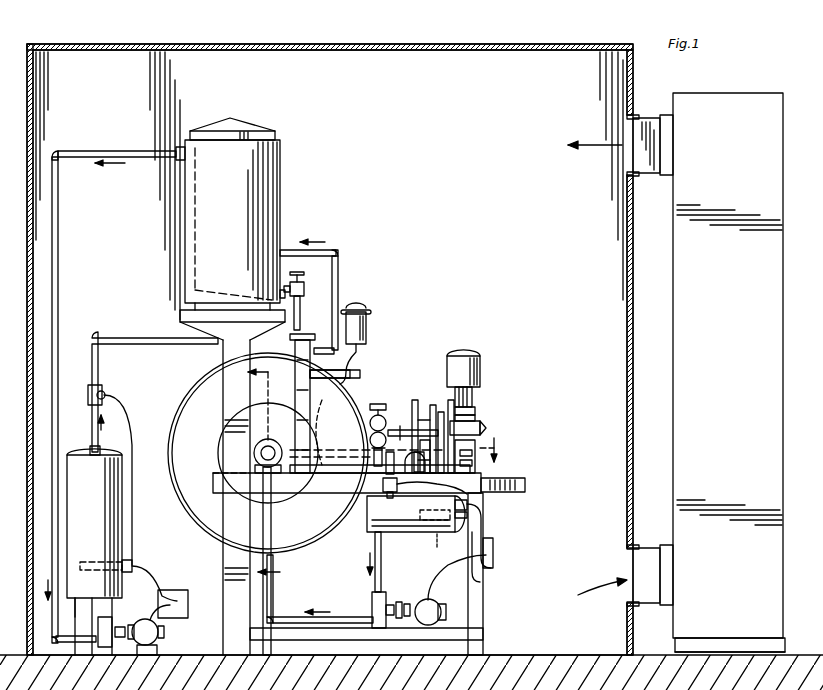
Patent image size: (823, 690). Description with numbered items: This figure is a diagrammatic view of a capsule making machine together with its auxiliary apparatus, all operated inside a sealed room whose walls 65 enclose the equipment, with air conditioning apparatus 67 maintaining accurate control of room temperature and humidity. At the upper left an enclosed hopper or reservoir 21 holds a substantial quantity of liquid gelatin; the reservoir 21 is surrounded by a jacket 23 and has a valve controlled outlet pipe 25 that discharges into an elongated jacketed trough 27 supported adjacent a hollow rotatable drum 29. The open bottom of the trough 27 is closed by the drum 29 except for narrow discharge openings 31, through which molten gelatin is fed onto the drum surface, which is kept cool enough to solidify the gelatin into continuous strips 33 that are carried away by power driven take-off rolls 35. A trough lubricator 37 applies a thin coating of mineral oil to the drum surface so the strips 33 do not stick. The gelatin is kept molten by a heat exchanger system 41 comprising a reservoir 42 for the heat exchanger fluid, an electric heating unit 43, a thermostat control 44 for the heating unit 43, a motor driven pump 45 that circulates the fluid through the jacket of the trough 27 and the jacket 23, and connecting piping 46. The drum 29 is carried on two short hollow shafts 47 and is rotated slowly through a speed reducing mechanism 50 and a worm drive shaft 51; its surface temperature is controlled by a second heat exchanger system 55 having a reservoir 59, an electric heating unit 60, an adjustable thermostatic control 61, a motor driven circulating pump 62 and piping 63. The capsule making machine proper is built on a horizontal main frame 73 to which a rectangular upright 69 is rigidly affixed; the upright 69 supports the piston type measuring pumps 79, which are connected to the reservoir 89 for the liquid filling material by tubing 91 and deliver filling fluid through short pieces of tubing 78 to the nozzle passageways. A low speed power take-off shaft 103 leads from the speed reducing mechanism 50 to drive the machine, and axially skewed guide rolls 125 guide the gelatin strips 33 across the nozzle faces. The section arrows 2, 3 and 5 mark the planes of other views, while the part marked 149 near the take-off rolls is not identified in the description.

The walls 65 is at (418, 44).
The hopper or reservoir 21 is at (262, 130).
The jacket 23 is at (280, 197).
The connecting piping 46 is at (58, 240).
The thermostat control 44 is at (102, 390).
The reservoir 42 is at (108, 508).
The electric heating unit 43 is at (90, 562).
The motor driven pump 45 is at (100, 625).
The heat exchanger system 41 is at (80, 379).
The rotatable drum 29 is at (208, 406).
The gelatin strips 33 is at (170, 430).
The short hollow shafts 47 is at (270, 450).
The discharge openings 31 is at (290, 360).
The section line 2 is at (269, 467).
The piping 63 is at (321, 445).
The valve controlled outlet pipe 25 is at (300, 297).
The jacketed trough 27 is at (300, 340).
The trough lubricator 37 is at (350, 374).
The horizontal main frame 73 is at (488, 490).
The worm drive shaft 51 is at (340, 478).
The take-off rolls 35 is at (376, 414).
The section line 3 is at (413, 437).
The guide 149 is at (412, 454).
The adjustable thermostatic control 61 is at (383, 486).
The speed reducing mechanism 50 is at (432, 486).
The low speed power take-off shaft 103 is at (460, 483).
The upright 69 is at (428, 403).
The reservoir 89 is at (478, 365).
The piping or tubing 91 is at (472, 392).
The measuring pumps 79 is at (475, 410).
The tubing 78 is at (475, 418).
The skewed guide rolls 125 is at (480, 440).
The section line 5 is at (493, 450).
The heat exchanger system 55 is at (427, 556).
The electric heating unit 60 is at (464, 543).
The reservoir 59 is at (368, 541).
The motor driven circulating pump 62 is at (388, 604).
The air conditioning apparatus 67 is at (690, 270).